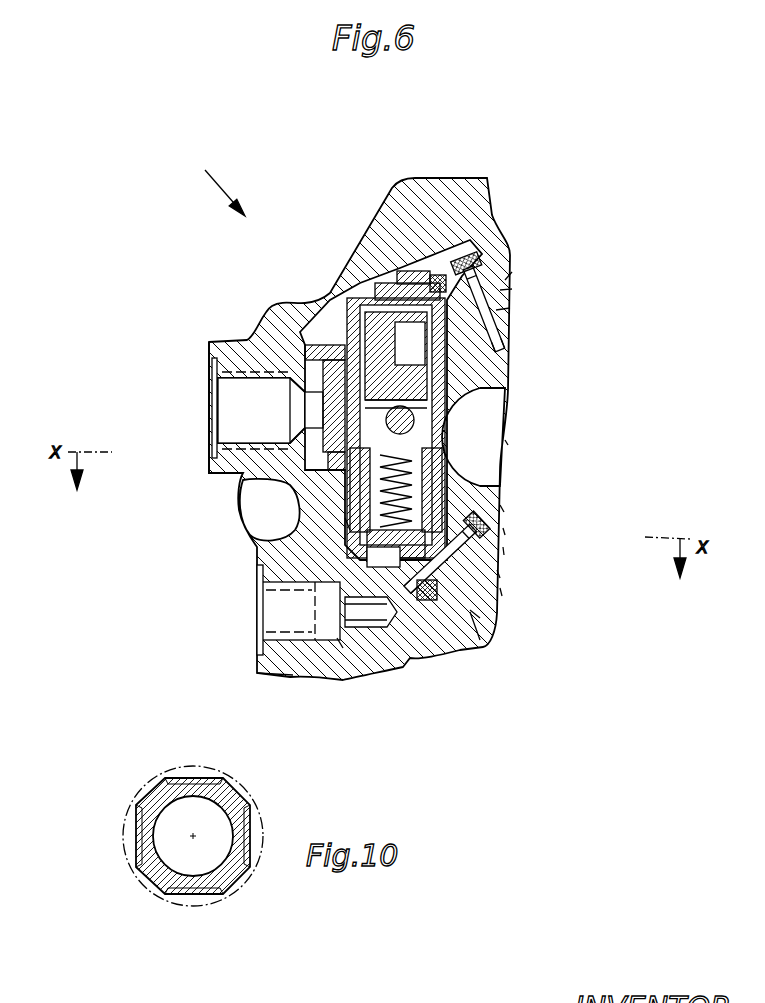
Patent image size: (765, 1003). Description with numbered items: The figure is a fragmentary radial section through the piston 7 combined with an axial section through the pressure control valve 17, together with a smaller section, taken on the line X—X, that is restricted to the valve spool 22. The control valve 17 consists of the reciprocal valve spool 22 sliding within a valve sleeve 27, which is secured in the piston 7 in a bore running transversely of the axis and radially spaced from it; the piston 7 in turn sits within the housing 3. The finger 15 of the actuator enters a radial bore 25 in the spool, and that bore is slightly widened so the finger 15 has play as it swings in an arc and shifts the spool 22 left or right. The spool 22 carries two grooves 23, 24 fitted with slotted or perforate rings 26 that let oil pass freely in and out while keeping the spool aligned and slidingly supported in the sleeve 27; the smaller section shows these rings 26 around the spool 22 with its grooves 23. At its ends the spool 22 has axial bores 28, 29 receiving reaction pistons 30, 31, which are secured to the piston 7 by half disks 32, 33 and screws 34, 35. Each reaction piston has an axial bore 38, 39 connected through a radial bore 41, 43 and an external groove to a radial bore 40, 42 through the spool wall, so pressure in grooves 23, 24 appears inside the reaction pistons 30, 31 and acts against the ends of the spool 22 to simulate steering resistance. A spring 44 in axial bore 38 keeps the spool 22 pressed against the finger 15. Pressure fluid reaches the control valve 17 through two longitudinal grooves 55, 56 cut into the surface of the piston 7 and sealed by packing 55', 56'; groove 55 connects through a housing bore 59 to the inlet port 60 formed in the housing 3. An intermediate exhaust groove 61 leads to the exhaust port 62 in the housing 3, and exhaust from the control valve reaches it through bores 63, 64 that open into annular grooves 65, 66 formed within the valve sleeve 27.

In FIG. 6, the housing 3 is at (293, 663).
In FIG. 6, the piston 7 is at (480, 640).
In FIG. 6, the finger 15 is at (500, 421).
In FIG. 6, the pressure control valve 17 is at (214, 183).
In FIG. 6, the valve spool 22 is at (560, 469).
In FIG. 10, the valve spool 22 is at (133, 862).
In FIG. 6, the groove 23 is at (503, 547).
In FIG. 10, the groove 23 is at (200, 898).
In FIG. 6, the groove 24 is at (495, 336).
In FIG. 6, the radial bore 25 is at (560, 443).
In FIG. 6, the slotted ring 26 is at (272, 303).
In FIG. 10, the slotted ring 26 is at (160, 890).
In FIG. 6, the valve sleeve 27 is at (345, 518).
In FIG. 6, the axial bore 28 is at (490, 485).
In FIG. 6, the axial bore 29 is at (490, 391).
In FIG. 6, the reaction piston 30 is at (497, 570).
In FIG. 6, the reaction piston 31 is at (512, 272).
In FIG. 6, the half disk 32 is at (500, 588).
In FIG. 6, the half disk 33 is at (512, 289).
In FIG. 6, the screw 34 is at (470, 610).
In FIG. 6, the screw 35 is at (510, 308).
In FIG. 6, the axial bore 38 is at (500, 505).
In FIG. 6, the axial bore 39 is at (482, 365).
In FIG. 6, the radial bore 40 is at (340, 640).
In FIG. 6, the radial bore 41 is at (360, 640).
In FIG. 6, the radial bore 42 is at (348, 295).
In FIG. 6, the radial bore 43 is at (383, 268).
In FIG. 6, the spring 44 is at (503, 528).
In FIG. 6, the longitudinal groove 55 is at (444, 643).
In FIG. 6, the packing 55' is at (453, 677).
In FIG. 6, the longitudinal groove 56 is at (451, 234).
In FIG. 6, the packing 56' is at (455, 203).
In FIG. 6, the housing bore 59 is at (397, 650).
In FIG. 6, the inlet port 60 is at (282, 617).
In FIG. 6, the exhaust groove 61 is at (318, 419).
In FIG. 6, the exhaust port 62 is at (245, 417).
In FIG. 6, the bore 63 is at (300, 452).
In FIG. 6, the bore 64 is at (330, 378).
In FIG. 6, the annular groove 65 is at (310, 474).
In FIG. 6, the annular groove 66 is at (305, 350).